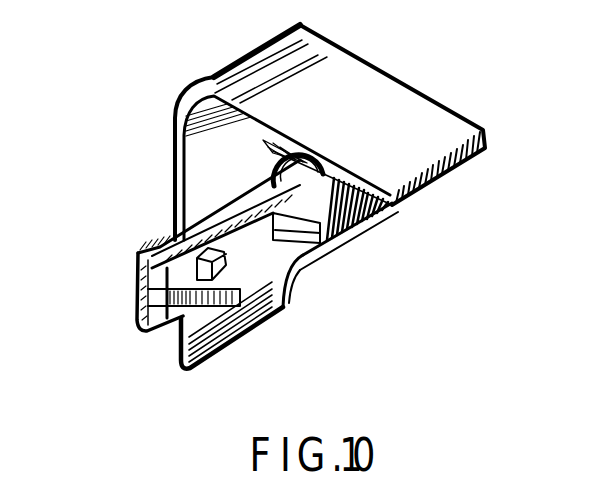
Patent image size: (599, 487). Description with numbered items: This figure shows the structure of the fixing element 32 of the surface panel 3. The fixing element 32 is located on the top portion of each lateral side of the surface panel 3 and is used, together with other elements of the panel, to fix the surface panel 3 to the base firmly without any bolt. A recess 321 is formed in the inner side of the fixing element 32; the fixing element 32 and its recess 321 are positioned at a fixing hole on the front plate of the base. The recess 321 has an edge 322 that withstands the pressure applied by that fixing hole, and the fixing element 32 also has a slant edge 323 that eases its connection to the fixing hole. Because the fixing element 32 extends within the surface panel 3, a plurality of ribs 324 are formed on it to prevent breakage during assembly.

The surface panel 3 is at (353, 193).
The fixing element 32 is at (185, 246).
The recess 321 is at (220, 268).
The edge 322 is at (297, 268).
The slant edge 323 is at (168, 296).
The ribs 324 is at (268, 160).